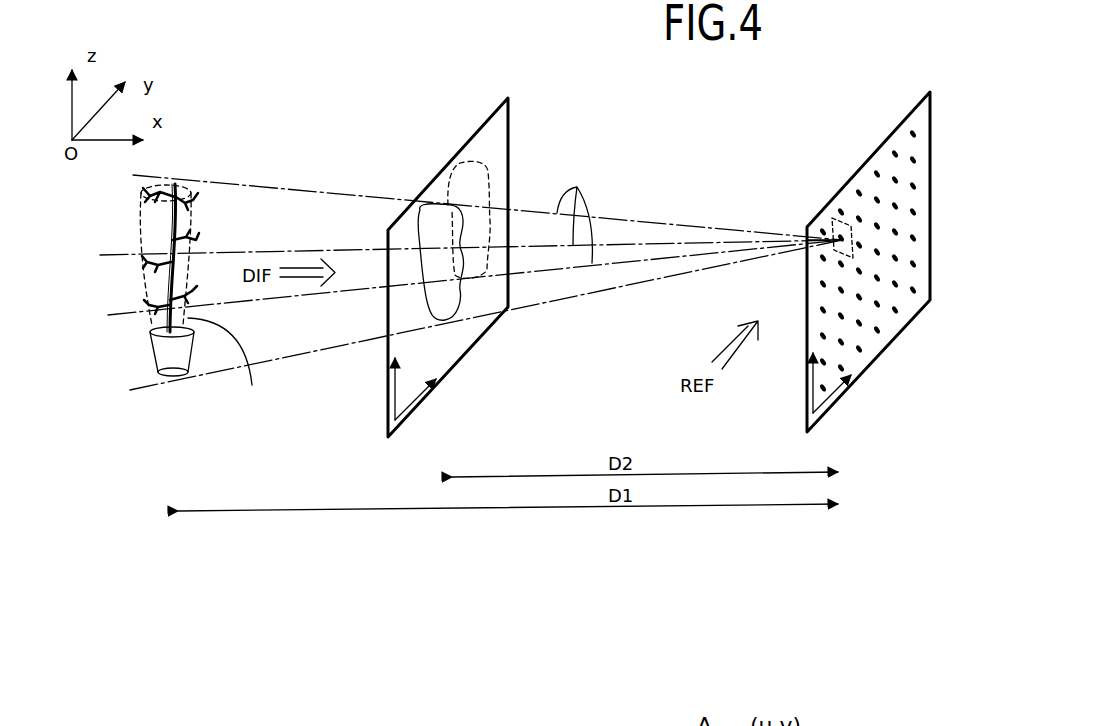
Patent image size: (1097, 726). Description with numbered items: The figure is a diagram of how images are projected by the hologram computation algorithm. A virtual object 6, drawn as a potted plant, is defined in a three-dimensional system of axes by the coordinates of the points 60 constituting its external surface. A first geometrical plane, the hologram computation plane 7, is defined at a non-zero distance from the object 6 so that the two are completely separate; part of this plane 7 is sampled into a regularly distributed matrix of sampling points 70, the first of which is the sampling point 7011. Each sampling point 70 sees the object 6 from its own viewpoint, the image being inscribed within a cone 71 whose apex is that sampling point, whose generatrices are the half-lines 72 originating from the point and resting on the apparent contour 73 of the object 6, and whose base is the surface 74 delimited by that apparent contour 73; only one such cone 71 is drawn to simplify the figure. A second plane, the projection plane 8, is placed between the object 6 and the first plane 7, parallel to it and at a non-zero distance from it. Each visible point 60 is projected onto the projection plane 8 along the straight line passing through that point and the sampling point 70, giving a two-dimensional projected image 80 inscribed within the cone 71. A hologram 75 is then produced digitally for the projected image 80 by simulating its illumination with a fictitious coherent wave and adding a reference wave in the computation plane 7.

The virtual object 6 is at (162, 353).
The point of the external surface 60 is at (177, 190).
The hologram computation plane 7 is at (868, 370).
The sampling point 70 is at (931, 345).
The sampling point 7011 is at (824, 232).
The hologram 75 is at (848, 218).
The projection plane 8 is at (463, 337).
The two-dimensional projected image 80 is at (445, 205).
The cone 71 is at (595, 300).
The half-line 72 is at (471, 240).
The apparent contour 73 is at (238, 369).
The surface 74 is at (185, 275).